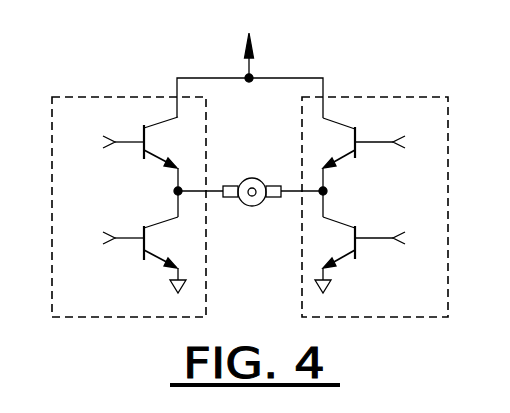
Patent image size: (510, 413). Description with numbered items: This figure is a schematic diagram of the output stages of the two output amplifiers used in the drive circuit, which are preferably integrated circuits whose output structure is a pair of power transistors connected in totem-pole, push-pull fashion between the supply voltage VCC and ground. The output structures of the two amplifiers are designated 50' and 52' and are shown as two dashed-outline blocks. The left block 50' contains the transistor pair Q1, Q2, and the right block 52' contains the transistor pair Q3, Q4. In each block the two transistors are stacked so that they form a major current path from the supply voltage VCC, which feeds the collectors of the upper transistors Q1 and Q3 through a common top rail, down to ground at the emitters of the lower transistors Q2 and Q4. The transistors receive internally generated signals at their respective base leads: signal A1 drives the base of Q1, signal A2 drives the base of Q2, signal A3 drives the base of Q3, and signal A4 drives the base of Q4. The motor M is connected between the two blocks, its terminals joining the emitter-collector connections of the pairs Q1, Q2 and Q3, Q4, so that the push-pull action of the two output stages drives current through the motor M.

The output structure of amplifier 50' is at (129, 188).
The output structure of amplifier 52' is at (375, 188).
The transistor Q1 is at (150, 130).
The transistor Q2 is at (160, 228).
The transistor Q3 is at (346, 130).
The transistor Q4 is at (340, 229).
The internally generated signal A1 is at (108, 142).
The internally generated signal A2 is at (108, 238).
The internally generated signal A3 is at (391, 142).
The internally generated signal A4 is at (391, 238).
The motor M is at (250, 170).
The supply voltage VCC is at (250, 64).